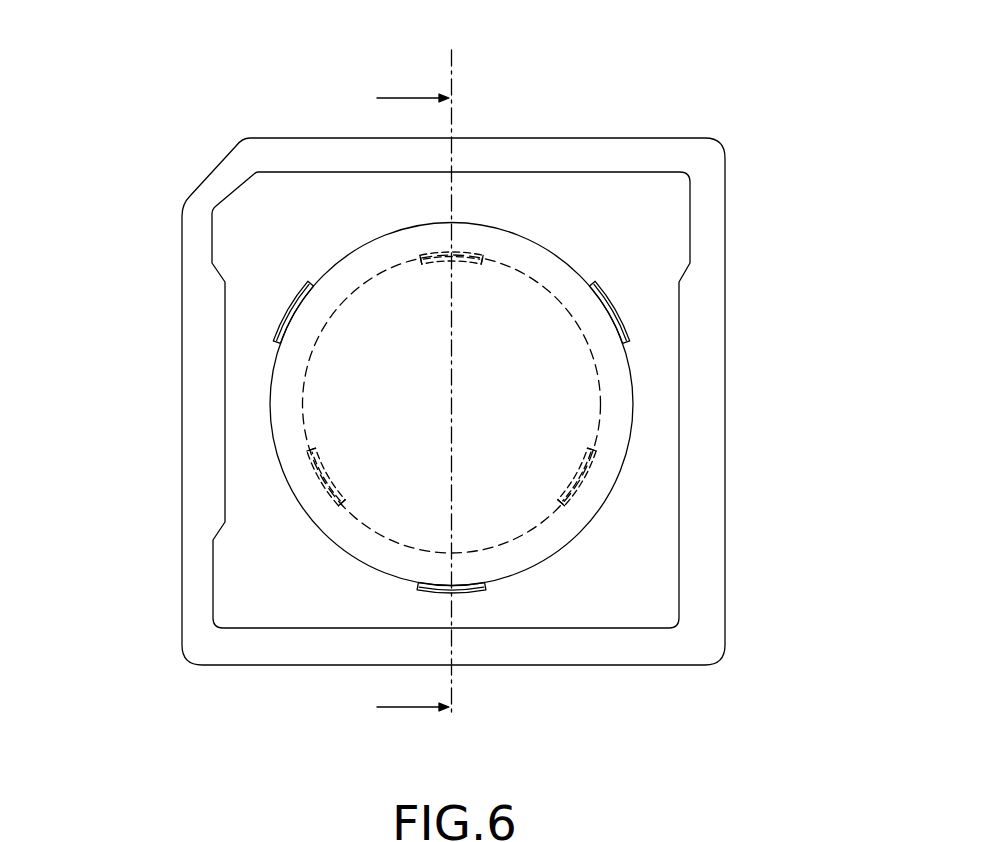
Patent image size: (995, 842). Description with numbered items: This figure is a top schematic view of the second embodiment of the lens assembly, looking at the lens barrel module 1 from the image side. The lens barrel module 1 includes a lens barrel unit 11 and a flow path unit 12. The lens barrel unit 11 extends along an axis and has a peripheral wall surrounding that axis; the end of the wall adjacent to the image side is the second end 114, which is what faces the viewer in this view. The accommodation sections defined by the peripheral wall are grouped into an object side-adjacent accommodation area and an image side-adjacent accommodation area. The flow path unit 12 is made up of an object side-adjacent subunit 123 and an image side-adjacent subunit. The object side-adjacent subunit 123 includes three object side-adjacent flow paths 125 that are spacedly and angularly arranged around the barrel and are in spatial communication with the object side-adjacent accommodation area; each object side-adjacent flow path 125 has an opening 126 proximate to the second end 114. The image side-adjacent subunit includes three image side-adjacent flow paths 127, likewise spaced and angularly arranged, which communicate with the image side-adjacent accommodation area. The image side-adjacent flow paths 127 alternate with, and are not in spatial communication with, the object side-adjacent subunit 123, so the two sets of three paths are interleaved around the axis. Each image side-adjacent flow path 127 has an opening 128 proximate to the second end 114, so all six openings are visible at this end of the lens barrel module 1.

The lens barrel module 1 is at (216, 126).
The lens barrel unit 11 is at (318, 150).
The second end 114 is at (641, 150).
The flow path unit 12 is at (288, 310).
The object side-adjacent subunit 123 is at (309, 490).
The object side-adjacent flow path 125 is at (472, 252).
The opening 126 is at (458, 252).
The image side-adjacent flow path 127 is at (294, 299).
The opening 128 is at (277, 333).